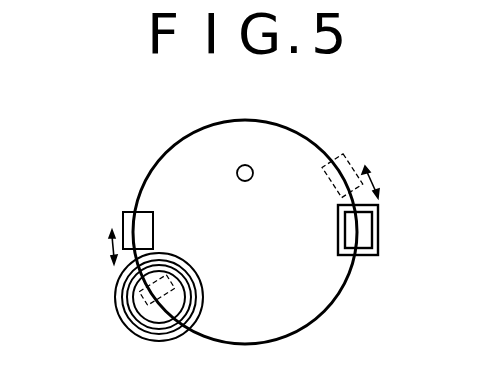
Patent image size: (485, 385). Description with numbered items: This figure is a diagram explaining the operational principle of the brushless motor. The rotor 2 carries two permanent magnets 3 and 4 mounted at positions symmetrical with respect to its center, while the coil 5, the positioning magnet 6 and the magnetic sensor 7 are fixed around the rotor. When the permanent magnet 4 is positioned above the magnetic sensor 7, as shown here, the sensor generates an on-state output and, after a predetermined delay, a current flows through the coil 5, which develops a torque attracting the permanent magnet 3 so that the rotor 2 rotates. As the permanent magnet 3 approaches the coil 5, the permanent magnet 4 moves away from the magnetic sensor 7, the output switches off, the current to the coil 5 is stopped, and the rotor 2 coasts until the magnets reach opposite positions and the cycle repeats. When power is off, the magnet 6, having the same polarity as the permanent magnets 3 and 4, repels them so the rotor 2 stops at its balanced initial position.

The rotor 2 is at (318, 320).
The permanent magnet 3 is at (123, 222).
The permanent magnet 4 is at (372, 217).
The coil 5 is at (117, 329).
The magnet 6 is at (253, 169).
The magnetic sensor 7 is at (378, 245).